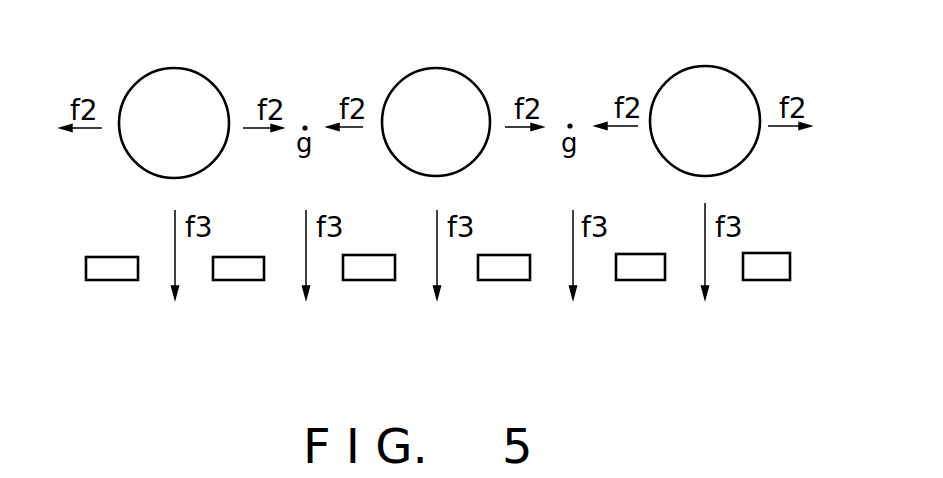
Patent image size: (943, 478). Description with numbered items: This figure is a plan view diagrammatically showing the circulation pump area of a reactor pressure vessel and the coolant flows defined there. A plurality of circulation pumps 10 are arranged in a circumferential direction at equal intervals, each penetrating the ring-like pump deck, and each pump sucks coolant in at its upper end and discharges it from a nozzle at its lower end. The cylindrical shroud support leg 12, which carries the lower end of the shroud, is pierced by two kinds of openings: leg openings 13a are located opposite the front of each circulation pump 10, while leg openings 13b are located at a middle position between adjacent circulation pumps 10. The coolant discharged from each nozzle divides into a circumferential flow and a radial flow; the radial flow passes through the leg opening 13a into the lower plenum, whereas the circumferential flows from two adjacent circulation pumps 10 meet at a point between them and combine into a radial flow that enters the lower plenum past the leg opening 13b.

The circulation pump 10 is at (213, 84).
The shroud support leg 12 is at (465, 290).
The leg opening 13a is at (462, 298).
The leg opening 13b is at (449, 298).